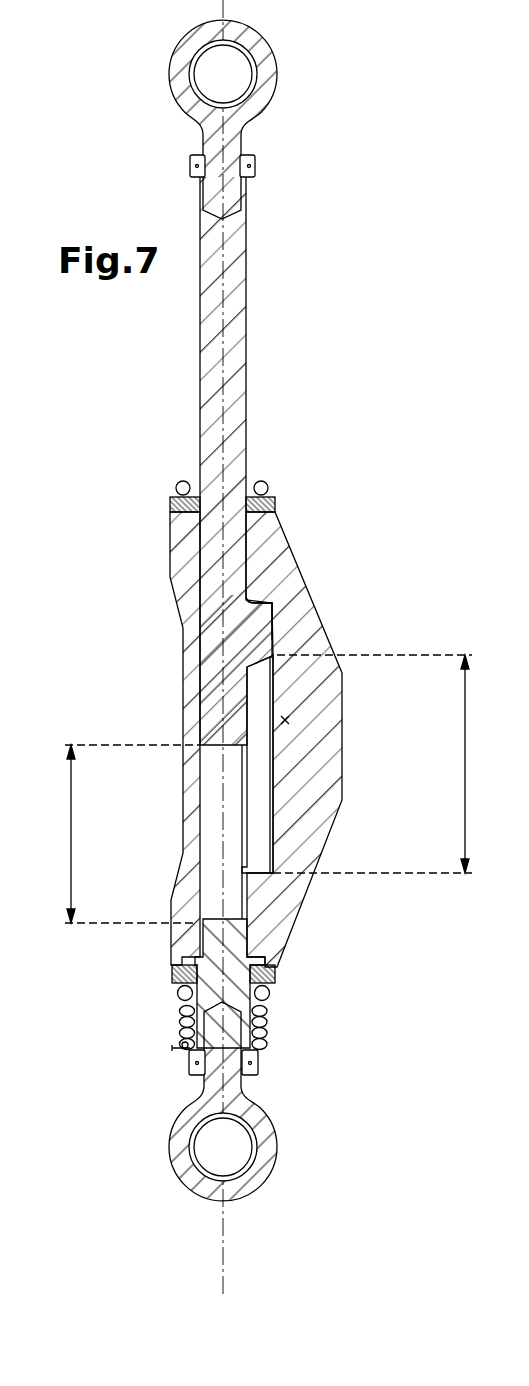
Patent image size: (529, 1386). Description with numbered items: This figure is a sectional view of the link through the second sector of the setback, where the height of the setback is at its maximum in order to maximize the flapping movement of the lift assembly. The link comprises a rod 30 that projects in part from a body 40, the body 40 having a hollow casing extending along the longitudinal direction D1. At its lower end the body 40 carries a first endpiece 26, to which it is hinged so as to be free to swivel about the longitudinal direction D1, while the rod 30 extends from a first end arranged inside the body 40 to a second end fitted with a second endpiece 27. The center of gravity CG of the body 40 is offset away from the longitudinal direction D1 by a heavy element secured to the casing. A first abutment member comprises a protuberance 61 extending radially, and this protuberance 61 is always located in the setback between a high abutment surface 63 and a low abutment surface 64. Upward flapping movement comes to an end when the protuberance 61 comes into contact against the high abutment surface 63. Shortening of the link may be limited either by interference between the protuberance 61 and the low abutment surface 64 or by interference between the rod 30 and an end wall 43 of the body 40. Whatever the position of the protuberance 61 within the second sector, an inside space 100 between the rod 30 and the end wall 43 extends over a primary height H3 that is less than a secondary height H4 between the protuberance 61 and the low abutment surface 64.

The second endpiece 27 is at (273, 92).
The rod 30 is at (247, 313).
The body 40 is at (170, 558).
The high abutment surface 63 is at (270, 598).
The protuberance 61 is at (263, 626).
The low abutment surface 64 is at (263, 878).
The inside space 100 is at (207, 831).
The end wall 43 is at (213, 903).
The first endpiece 26 is at (270, 1172).
The center of gravity CG is at (285, 720).
The secondary height H4 is at (390, 764).
The primary height H3 is at (115, 834).
The longitudinal direction D1 is at (223, 1241).